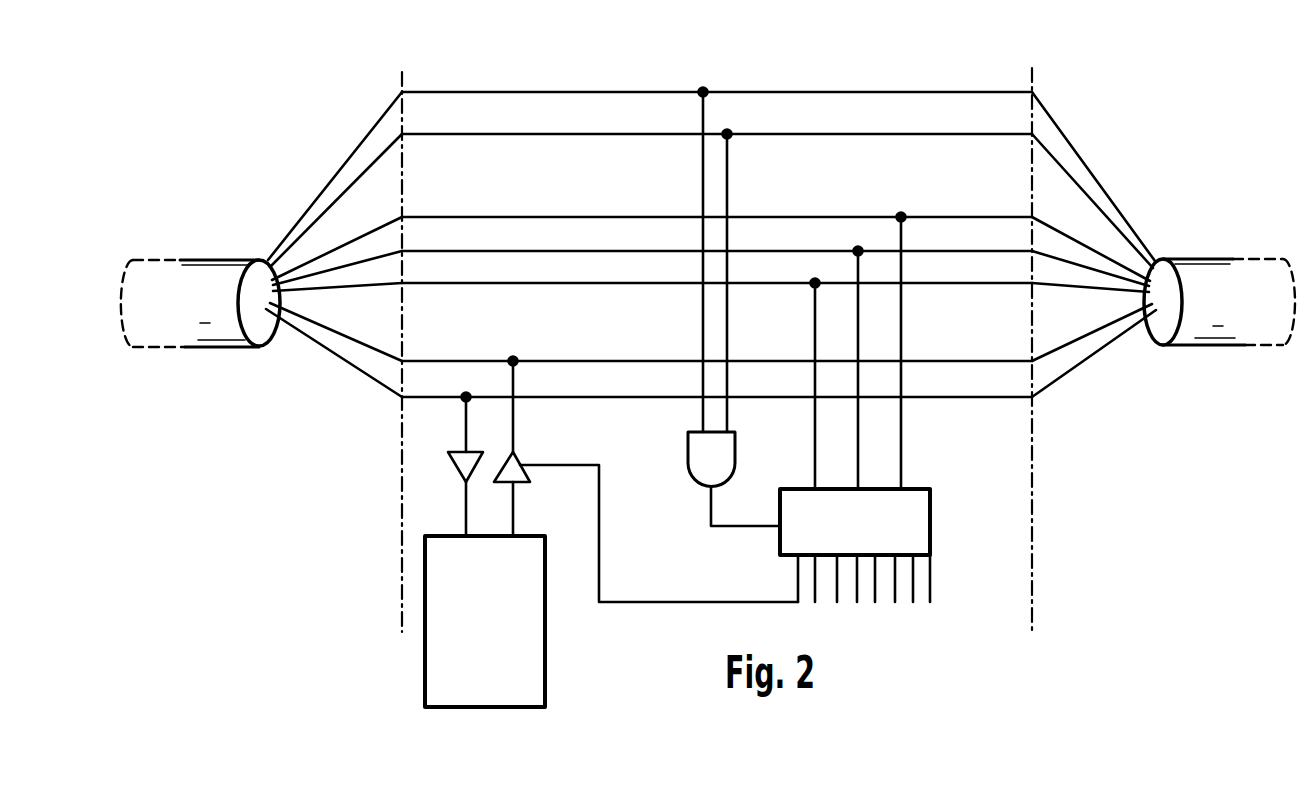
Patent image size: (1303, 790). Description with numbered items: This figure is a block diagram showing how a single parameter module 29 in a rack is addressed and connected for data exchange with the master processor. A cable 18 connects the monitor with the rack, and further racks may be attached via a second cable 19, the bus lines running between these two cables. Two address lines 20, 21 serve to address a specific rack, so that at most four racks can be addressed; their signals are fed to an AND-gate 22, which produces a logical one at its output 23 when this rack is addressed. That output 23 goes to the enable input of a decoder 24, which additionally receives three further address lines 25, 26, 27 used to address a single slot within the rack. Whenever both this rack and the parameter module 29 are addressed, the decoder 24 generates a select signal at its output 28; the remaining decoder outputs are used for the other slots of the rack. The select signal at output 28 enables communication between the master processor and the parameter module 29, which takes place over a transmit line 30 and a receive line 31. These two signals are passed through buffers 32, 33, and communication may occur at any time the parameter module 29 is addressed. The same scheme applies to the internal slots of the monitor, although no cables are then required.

The cable 18 is at (188, 276).
The cable 19 is at (1206, 276).
The address line 20 is at (438, 92).
The address line 21 is at (505, 134).
The AND-gate 22 is at (698, 442).
The output 23 is at (711, 508).
The decoder 24 is at (912, 523).
The address line 25 is at (430, 217).
The address line 26 is at (482, 251).
The address line 27 is at (540, 283).
The output 28 is at (797, 572).
The parameter module 29 is at (525, 676).
The transmit line 30 is at (415, 397).
The receive line 31 is at (542, 361).
The buffer 32 is at (466, 465).
The buffer 33 is at (508, 467).